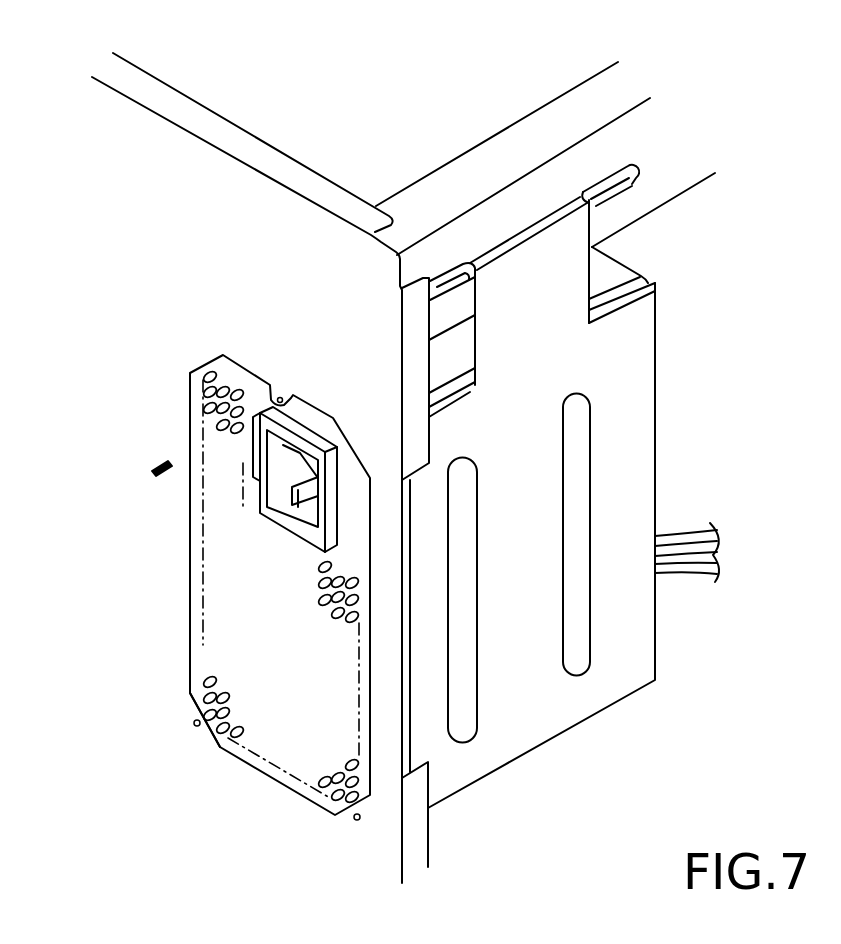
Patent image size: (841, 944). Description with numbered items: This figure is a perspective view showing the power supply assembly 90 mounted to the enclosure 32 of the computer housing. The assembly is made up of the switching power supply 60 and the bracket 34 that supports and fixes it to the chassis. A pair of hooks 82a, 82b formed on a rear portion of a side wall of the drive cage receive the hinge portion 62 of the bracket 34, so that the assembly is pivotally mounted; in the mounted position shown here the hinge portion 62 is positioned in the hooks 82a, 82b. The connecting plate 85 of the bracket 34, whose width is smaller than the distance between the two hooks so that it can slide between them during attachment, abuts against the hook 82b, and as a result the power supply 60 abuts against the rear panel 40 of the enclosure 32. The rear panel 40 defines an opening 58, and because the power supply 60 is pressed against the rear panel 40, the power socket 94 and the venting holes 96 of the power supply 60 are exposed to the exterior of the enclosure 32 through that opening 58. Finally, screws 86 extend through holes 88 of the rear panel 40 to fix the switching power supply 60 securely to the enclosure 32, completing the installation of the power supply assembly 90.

The enclosure 32 is at (157, 228).
The bracket 34 is at (557, 725).
The rear panel 40 is at (160, 612).
The opening 58 is at (222, 360).
The switching power supply 60 is at (278, 747).
The hinge portion 62 is at (637, 183).
The hook 82a is at (610, 193).
The hook 82b is at (452, 273).
The connecting plate 85 is at (560, 280).
The screws 86 is at (248, 420).
The holes 88 is at (280, 397).
The power supply assembly 90 is at (657, 462).
The power socket 94 is at (292, 477).
The venting holes 96 is at (220, 746).